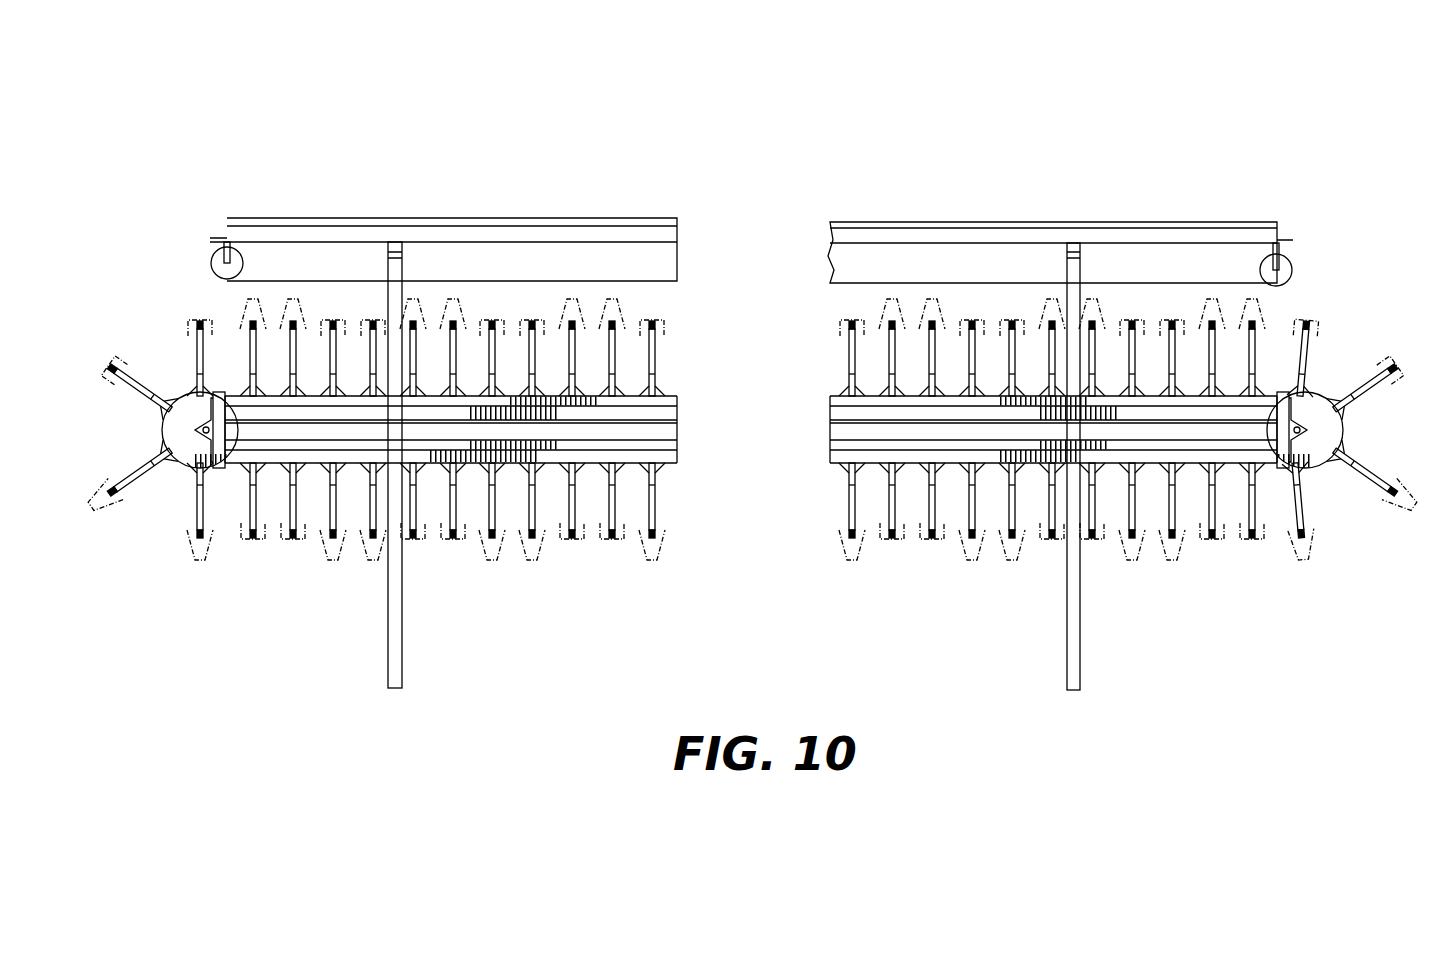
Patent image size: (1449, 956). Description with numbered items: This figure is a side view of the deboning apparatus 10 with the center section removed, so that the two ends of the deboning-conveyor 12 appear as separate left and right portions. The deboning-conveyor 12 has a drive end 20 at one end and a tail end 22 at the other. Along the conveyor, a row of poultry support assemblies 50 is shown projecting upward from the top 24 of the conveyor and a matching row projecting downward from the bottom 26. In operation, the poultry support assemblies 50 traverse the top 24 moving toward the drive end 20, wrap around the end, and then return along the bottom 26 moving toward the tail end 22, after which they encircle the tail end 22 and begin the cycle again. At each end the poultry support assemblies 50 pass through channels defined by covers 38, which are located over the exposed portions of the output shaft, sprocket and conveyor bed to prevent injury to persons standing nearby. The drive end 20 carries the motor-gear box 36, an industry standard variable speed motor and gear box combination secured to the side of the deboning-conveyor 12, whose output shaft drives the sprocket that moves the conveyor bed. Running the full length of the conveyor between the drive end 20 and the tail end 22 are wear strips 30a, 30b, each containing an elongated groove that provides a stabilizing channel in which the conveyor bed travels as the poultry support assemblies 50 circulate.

The deboning apparatus 10 is at (750, 365).
The deboning-conveyor 12 is at (753, 394).
The drive end 20 is at (150, 495).
The tail end 22 is at (1354, 479).
The top 24 is at (751, 384).
The bottom 26 is at (516, 468).
The wear strip 30a is at (678, 398).
The wear strip 30b is at (678, 455).
The motor-gear box 36 is at (190, 452).
The cover 38 is at (1318, 462).
The poultry support assemblies 50 is at (242, 312).